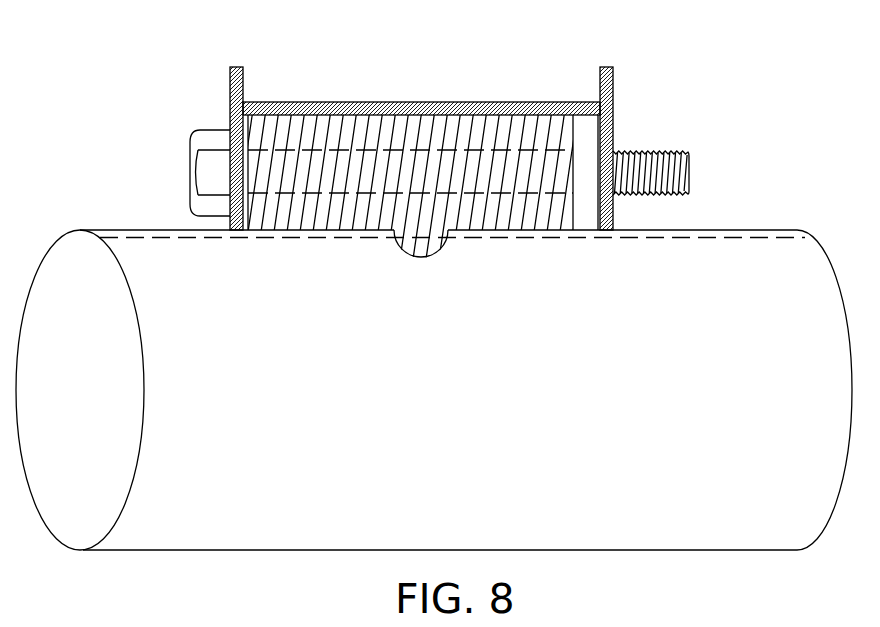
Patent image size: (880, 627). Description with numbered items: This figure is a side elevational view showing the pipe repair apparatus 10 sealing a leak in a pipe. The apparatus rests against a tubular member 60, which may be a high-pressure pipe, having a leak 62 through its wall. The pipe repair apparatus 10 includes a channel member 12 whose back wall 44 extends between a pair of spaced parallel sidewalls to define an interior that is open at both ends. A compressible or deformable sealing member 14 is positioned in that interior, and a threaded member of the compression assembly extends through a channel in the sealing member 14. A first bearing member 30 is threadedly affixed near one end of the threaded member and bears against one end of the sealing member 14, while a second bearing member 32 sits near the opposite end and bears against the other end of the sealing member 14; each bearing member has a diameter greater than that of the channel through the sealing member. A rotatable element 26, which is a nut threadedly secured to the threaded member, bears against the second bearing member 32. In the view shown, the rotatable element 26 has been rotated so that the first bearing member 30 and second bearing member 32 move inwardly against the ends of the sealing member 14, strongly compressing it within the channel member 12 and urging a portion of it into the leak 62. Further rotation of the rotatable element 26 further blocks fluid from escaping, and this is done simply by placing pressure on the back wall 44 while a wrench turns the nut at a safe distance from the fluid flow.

The pipe repair apparatus 10 is at (436, 179).
The channel member 12 is at (615, 129).
The sealing member 14 is at (435, 137).
The rotatable element 26 is at (192, 140).
The first bearing member 30 is at (583, 137).
The second bearing member 32 is at (250, 137).
The back wall 44 is at (392, 101).
The tubular member 60 is at (741, 252).
The leak 62 is at (432, 258).